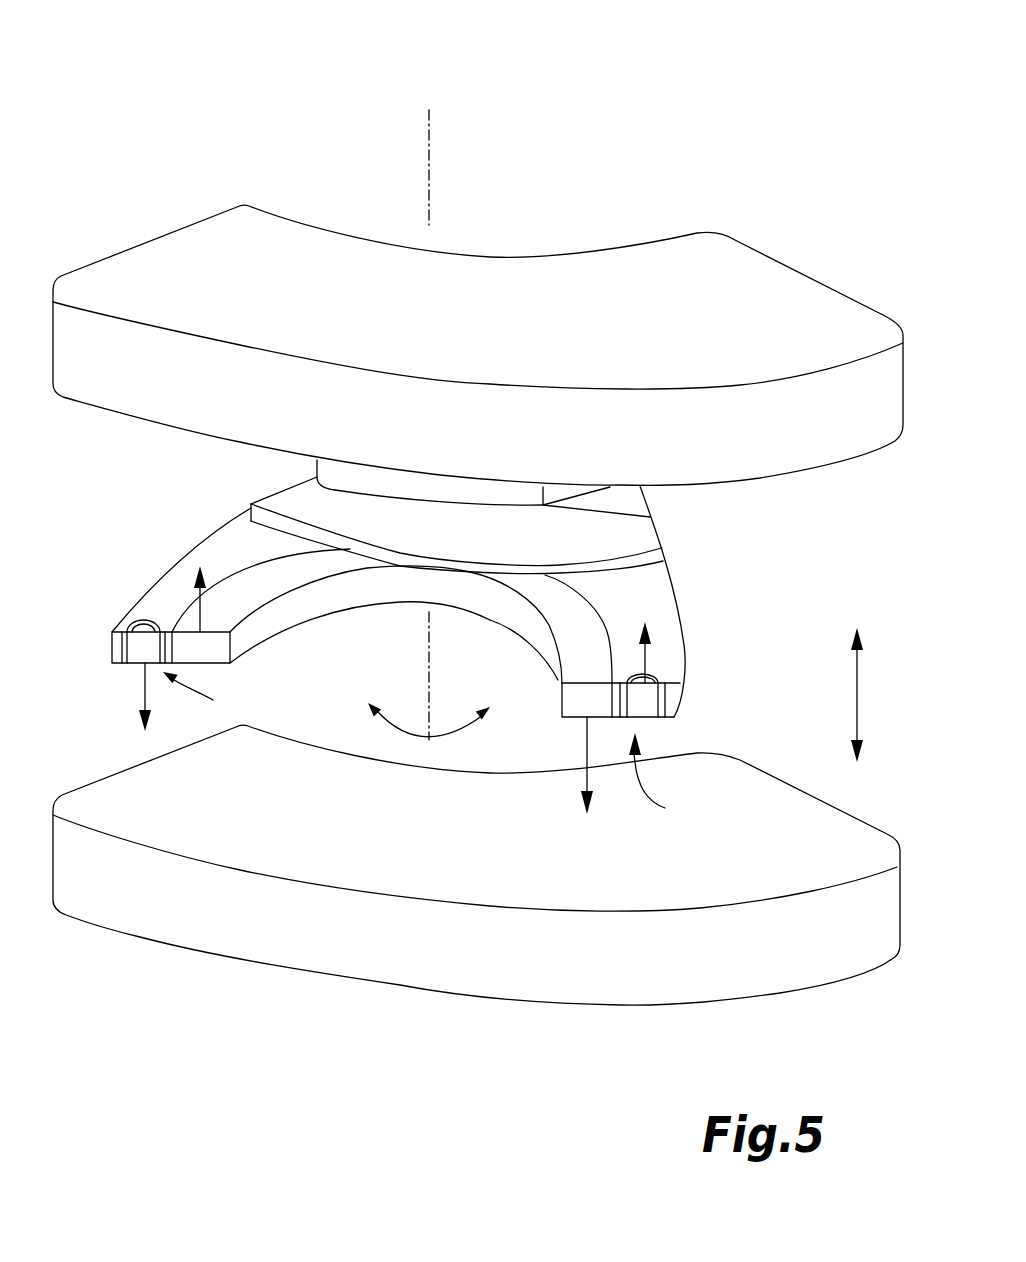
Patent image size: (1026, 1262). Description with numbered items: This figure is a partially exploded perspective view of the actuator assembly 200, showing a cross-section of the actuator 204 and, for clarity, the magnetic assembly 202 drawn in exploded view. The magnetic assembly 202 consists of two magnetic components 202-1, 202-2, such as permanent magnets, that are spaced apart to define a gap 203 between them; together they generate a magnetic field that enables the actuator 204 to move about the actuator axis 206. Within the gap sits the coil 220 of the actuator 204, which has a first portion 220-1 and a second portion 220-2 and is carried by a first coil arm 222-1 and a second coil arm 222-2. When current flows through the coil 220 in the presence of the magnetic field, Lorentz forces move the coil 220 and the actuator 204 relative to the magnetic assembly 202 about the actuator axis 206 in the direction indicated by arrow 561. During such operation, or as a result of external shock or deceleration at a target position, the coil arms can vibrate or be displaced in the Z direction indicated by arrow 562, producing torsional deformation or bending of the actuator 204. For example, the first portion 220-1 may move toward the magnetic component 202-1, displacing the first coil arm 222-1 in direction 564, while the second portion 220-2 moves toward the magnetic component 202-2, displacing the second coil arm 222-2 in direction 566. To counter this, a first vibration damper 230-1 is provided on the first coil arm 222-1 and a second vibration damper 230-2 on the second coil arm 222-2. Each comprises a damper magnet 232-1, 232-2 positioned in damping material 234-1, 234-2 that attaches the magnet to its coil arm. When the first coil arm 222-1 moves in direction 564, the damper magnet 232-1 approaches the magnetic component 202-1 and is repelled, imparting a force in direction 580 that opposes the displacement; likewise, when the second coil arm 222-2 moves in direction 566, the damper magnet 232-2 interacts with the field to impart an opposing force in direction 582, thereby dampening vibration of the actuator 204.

The actuator assembly 200 is at (97, 93).
The magnetic assembly 202 is at (775, 228).
The magnetic component 202-1 is at (623, 295).
The magnetic component 202-2 is at (553, 975).
The gap 203 is at (818, 525).
The actuator 204 is at (690, 530).
The actuator axis 206 is at (428, 202).
The coil 220 is at (357, 593).
The first portion of coil 220-1 is at (245, 636).
The second portion of coil 220-2 is at (555, 651).
The first coil arm 222-1 is at (156, 608).
The second coil arm 222-2 is at (664, 604).
The first vibration damper 230-1 is at (220, 694).
The second vibration damper 230-2 is at (681, 775).
The damper magnet 232-1 is at (143, 650).
The damper magnet 232-2 is at (645, 717).
The damping material 234-1 is at (120, 633).
The damping material 234-2 is at (668, 711).
The arrow indicating direction of actuator movement 561 is at (452, 730).
The arrow indicating Z direction 562 is at (859, 698).
The direction of first coil arm displacement 564 is at (198, 600).
The direction of second coil arm displacement 566 is at (667, 723).
The direction of opposing force on first coil arm 580 is at (143, 692).
The direction of opposing force on second coil arm 582 is at (645, 657).